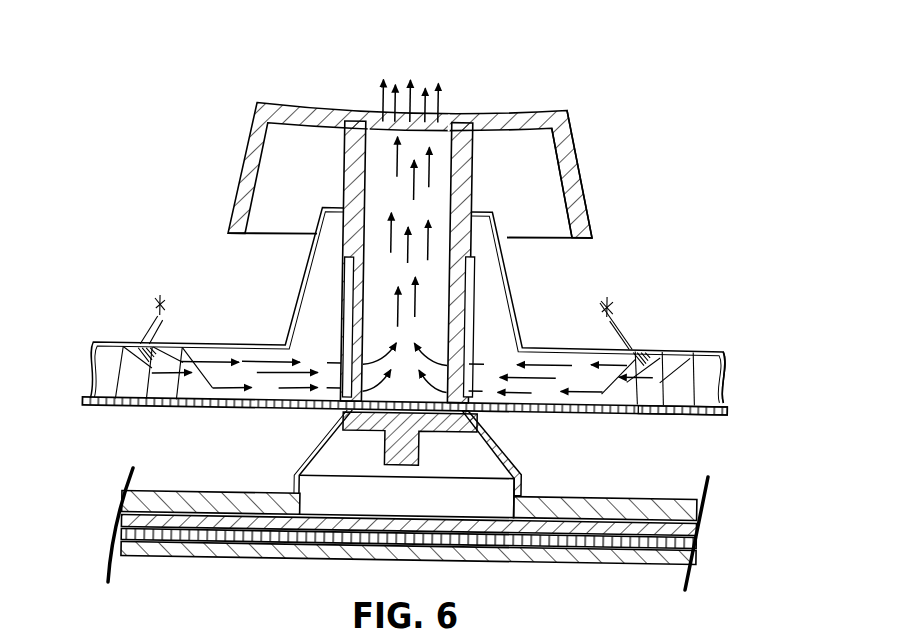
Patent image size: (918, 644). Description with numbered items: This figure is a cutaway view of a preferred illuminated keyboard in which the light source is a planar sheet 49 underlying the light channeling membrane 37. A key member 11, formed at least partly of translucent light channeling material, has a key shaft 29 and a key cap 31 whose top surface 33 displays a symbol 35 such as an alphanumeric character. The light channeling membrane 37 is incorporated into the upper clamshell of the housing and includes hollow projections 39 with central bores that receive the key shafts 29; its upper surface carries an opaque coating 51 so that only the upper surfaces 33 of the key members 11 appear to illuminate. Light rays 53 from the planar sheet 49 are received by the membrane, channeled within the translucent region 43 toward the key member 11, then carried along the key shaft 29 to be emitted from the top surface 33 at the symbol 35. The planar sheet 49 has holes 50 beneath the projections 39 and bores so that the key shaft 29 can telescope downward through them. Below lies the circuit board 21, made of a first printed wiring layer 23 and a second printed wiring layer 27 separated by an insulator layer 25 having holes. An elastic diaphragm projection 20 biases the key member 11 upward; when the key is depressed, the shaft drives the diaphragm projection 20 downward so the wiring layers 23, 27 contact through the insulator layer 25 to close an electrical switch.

The key member 11 is at (547, 183).
The diaphragm projection 20 is at (300, 457).
The circuit board 21 is at (614, 562).
The first printed wiring layer 23 is at (702, 526).
The insulator layer 25 is at (680, 542).
The second printed wiring layer 27 is at (684, 557).
The key shaft 29 is at (357, 300).
The key cap 31 is at (575, 138).
The top surface of the key cap 33 is at (508, 110).
The symbol 35 is at (380, 117).
The light channeling membrane 37 is at (637, 352).
The hollow projection 39 is at (493, 290).
The translucent region 43 is at (712, 380).
The planar sheet 49 is at (682, 418).
The hole 50 is at (320, 412).
The opaque coating 51 is at (142, 348).
The light rays 53 is at (411, 82).